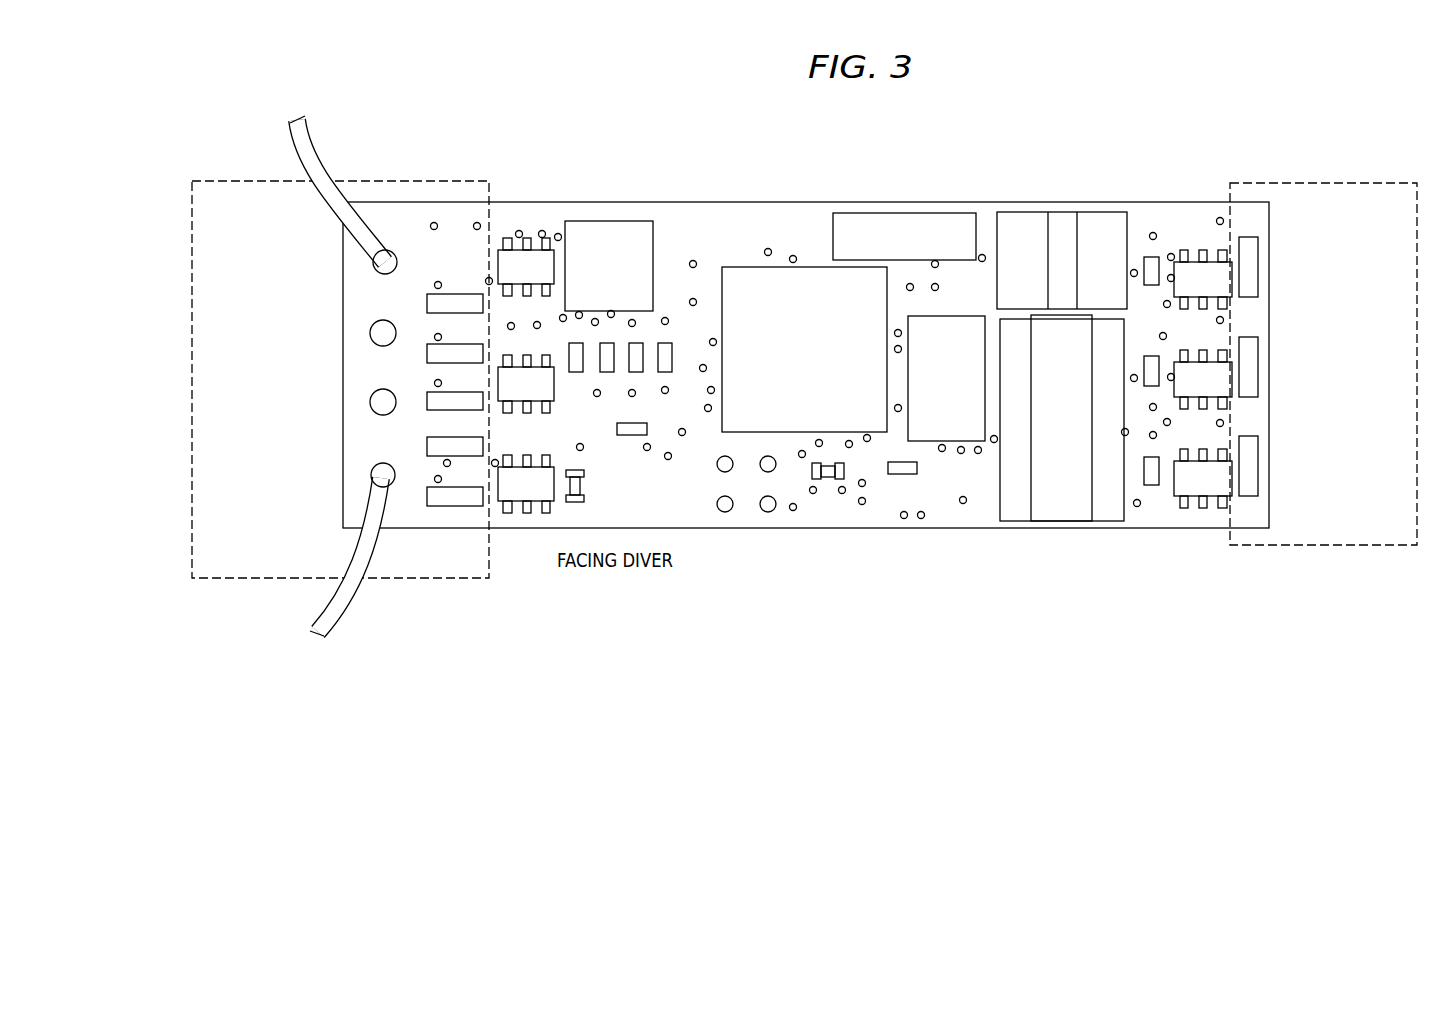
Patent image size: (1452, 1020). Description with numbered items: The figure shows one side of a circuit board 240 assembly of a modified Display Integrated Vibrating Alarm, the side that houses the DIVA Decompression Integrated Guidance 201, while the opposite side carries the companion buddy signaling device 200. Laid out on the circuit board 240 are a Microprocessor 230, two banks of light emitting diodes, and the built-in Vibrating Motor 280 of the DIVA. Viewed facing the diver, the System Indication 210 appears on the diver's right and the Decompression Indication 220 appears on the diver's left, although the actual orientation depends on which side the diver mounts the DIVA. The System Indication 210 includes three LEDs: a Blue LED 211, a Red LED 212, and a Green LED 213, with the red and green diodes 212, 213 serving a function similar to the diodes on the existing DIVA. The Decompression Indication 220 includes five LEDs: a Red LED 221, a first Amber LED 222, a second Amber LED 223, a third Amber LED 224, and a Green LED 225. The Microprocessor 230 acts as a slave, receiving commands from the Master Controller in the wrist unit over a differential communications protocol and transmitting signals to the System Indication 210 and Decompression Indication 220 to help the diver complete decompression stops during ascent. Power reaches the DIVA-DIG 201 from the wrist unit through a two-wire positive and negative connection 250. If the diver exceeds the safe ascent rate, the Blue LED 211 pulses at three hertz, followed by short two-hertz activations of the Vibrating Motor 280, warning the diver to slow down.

The Display Integrated Vibrating Alarm—Buddy Signaling Device 200 is at (806, 444).
The Display Integrated Vibrating Alarm—Decompression Integrated Guidance 201 is at (801, 444).
The System Indication 210 is at (1322, 545).
The Blue LED 211 is at (1250, 268).
The Red LED 212 is at (1250, 467).
The Green LED 213 is at (1250, 368).
The Decompression Indication 220 is at (223, 580).
The Red LED 221 is at (433, 495).
The Amber LED 222 is at (433, 445).
The Amber LED 223 is at (433, 398).
The Amber LED 224 is at (433, 353).
The Green LED 225 is at (433, 303).
The Microprocessor 230 is at (750, 420).
The circuit board 240 is at (1032, 529).
The two-wire connection 250 is at (320, 153).
The Vibrating Motor 280 is at (1063, 233).